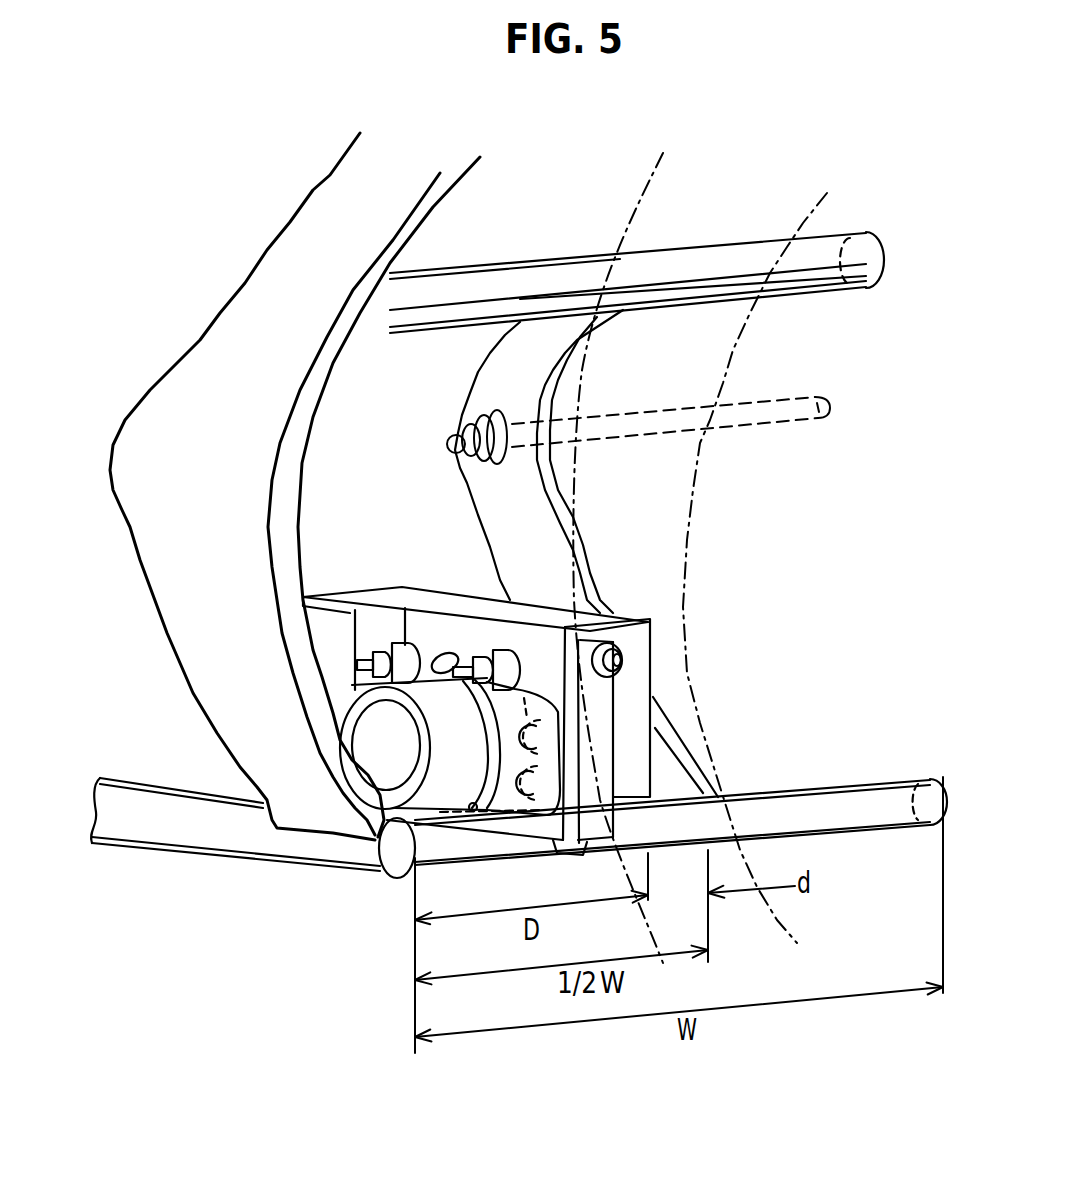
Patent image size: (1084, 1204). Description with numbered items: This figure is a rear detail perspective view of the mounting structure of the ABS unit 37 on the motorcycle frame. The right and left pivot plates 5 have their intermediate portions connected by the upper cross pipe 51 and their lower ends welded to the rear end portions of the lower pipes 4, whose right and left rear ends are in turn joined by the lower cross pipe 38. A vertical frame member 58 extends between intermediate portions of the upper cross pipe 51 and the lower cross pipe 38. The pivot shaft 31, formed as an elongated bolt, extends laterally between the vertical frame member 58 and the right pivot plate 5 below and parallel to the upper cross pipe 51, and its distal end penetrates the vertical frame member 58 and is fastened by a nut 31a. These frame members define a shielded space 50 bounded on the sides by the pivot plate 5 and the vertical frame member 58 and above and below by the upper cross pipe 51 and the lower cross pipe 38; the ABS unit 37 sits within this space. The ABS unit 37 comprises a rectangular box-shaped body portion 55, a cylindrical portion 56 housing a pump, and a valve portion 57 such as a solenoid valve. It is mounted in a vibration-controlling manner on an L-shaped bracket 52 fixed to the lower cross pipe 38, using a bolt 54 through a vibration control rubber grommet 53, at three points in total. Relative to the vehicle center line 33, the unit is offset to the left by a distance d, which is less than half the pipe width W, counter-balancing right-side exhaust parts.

The lower pipe 4 is at (167, 827).
The pivot plate 5 is at (223, 313).
The pivot shaft 31 is at (760, 420).
The nut 31a is at (460, 413).
The center line 33 is at (648, 198).
The ABS unit 37 is at (657, 688).
The lower cross pipe 38 is at (853, 807).
The shielded space 50 is at (323, 470).
The upper cross pipe 51 is at (520, 282).
The L-shaped bracket 52 is at (600, 742).
The vibration control rubber grommet 53 is at (610, 642).
The bolt 54 is at (635, 662).
The body portion 55 is at (457, 598).
The cylindrical portion 56 is at (329, 830).
The valve portion 57 is at (333, 601).
The vertical frame member 58 is at (537, 367).